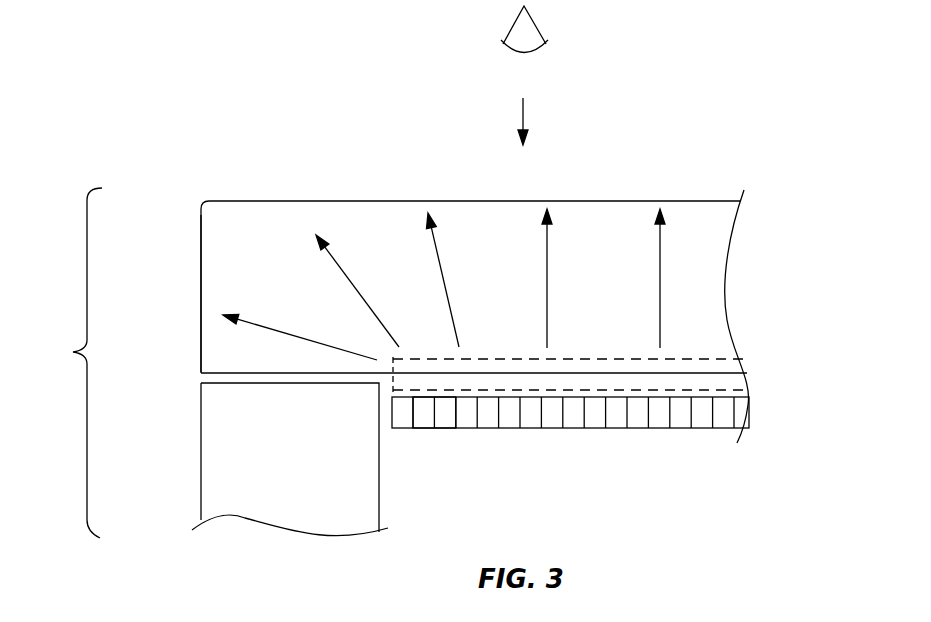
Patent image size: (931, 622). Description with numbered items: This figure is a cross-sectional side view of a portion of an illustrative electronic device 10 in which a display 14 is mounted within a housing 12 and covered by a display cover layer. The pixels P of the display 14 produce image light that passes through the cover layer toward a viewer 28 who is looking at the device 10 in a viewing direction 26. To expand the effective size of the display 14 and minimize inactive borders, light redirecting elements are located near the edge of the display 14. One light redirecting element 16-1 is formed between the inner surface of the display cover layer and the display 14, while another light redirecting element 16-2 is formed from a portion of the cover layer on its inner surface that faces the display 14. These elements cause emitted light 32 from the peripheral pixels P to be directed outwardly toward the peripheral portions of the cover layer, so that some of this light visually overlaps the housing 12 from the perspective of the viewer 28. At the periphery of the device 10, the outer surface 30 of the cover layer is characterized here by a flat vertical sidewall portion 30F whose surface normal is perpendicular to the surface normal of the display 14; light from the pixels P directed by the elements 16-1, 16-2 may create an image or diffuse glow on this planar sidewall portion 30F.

The device 10 is at (74, 363).
The housing 12 is at (220, 483).
The display 14 is at (740, 412).
The light redirecting element 16-1 is at (740, 380).
The light redirecting element 16-2 is at (740, 372).
The direction 26 is at (523, 115).
The viewer 28 is at (537, 25).
The outer surface 30 is at (690, 200).
The flat vertical sidewall portion 30F is at (200, 268).
The emitted light 32 is at (440, 270).
The pixels P is at (445, 418).